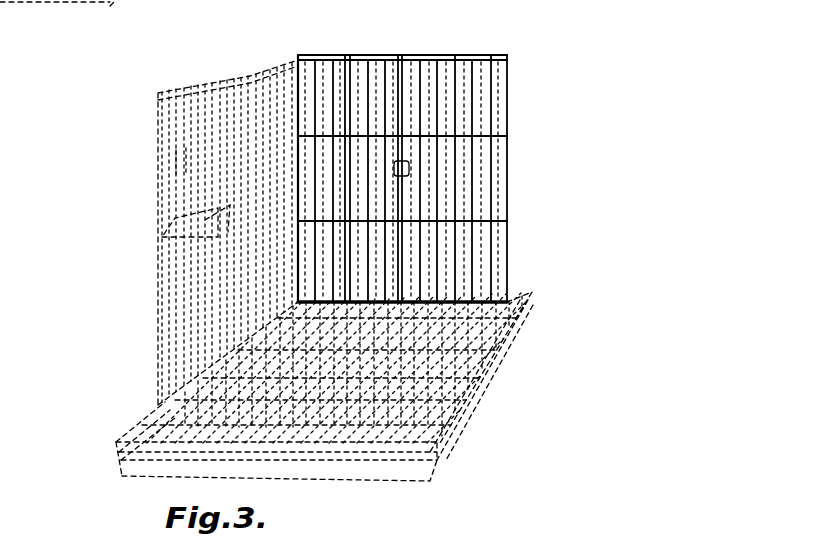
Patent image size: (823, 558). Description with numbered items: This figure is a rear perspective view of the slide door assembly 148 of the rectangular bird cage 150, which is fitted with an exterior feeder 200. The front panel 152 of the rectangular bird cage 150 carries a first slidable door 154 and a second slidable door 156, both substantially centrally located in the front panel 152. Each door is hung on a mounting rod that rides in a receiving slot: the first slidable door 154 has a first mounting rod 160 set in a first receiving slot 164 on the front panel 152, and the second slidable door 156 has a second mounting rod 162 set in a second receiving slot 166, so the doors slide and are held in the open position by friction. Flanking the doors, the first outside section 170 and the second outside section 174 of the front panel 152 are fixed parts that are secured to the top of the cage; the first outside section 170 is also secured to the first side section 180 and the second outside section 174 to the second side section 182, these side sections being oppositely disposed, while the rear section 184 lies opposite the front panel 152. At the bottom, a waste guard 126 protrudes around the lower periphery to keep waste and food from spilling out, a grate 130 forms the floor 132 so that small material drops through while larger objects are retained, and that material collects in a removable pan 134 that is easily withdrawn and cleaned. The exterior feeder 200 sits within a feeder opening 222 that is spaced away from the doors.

The waste guard 126 is at (463, 388).
The grate 130 is at (360, 397).
The floor 132 is at (448, 462).
The removable pan 134 is at (116, 462).
The slide door assembly 148 is at (290, 45).
The rectangular bird cage 150 is at (86, 212).
The front panel 152 is at (525, 68).
The first slidable door 154 is at (415, 192).
The second slidable door 156 is at (372, 190).
The first mounting rod 160 is at (438, 56).
The second mounting rod 162 is at (385, 56).
The first receiving slot 164 is at (488, 56).
The second receiving slot 166 is at (323, 56).
The first outside section 170 is at (472, 78).
The second outside section 174 is at (336, 126).
The first side section 180 is at (530, 199).
The second side section 182 is at (168, 161).
The rear section 184 is at (212, 325).
The exterior feeder 200 is at (165, 239).
The feeder opening 222 is at (214, 246).